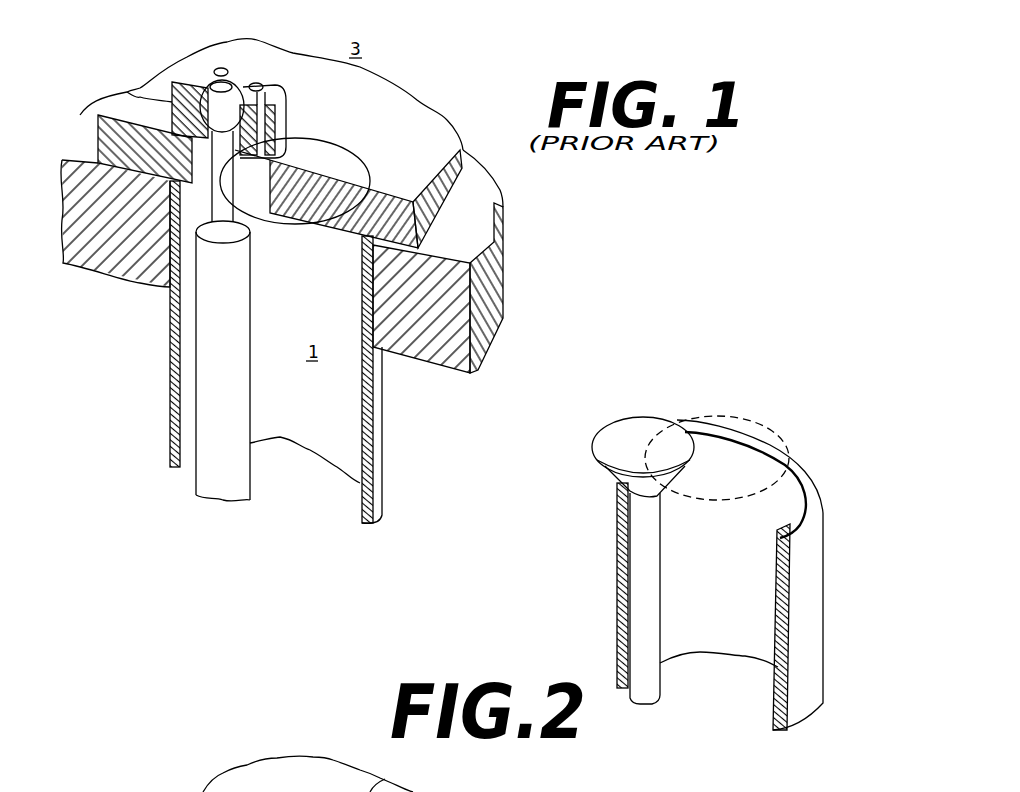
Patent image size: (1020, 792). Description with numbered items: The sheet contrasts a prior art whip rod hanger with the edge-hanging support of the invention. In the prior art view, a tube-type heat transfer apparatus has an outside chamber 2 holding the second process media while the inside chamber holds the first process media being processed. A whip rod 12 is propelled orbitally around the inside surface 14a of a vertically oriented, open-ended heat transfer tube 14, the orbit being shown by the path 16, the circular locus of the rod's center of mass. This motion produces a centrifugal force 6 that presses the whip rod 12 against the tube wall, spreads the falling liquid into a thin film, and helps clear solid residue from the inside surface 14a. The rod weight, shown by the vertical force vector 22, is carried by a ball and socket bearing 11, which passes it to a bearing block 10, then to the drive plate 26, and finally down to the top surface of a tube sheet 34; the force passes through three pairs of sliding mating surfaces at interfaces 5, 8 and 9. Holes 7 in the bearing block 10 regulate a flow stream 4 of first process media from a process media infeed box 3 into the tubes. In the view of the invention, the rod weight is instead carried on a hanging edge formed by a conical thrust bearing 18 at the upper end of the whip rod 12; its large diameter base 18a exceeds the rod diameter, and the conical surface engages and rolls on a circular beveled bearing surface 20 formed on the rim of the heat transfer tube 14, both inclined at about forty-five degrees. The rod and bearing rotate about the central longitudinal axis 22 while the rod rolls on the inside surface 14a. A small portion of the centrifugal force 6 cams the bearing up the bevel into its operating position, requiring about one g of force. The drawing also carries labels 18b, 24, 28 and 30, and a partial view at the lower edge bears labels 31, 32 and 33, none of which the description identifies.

In FIG. 1, the outside chamber 2 is at (96, 321).
In FIG. 1, the process media infeed box 3 is at (271, 143).
In FIG. 1, the flow stream 4 is at (262, 97).
In FIG. 1, the interface 5 is at (93, 153).
In FIG. 1, the centrifugal force 6 is at (140, 397).
In FIG. 2, the centrifugal force 6 is at (598, 612).
In FIG. 1, the holes 7 is at (280, 97).
In FIG. 1, the interface 8 is at (98, 115).
In FIG. 1, the interface 9 is at (214, 70).
In FIG. 1, the bearing block 10 is at (128, 90).
In FIG. 1, the ball and socket bearing 11 is at (205, 80).
In FIG. 1, the whip rod 12 is at (236, 420).
In FIG. 2, the whip rod 12 is at (652, 596).
In FIG. 1, the heat transfer tube 14 is at (374, 444).
In FIG. 2, the heat transfer tube 14 is at (807, 609).
In FIG. 1, the inside surface 14a is at (333, 432).
In FIG. 2, the inside surface 14a is at (748, 655).
In FIG. 1, the path 16 is at (313, 133).
In FIG. 2, the path 16 is at (707, 417).
In FIG. 2, the conical thrust bearing 18 is at (608, 473).
In FIG. 2, the large diameter base 18a is at (622, 432).
In FIG. 2, the head underside 18b is at (632, 490).
In FIG. 2, the beveled bearing surface 20 is at (810, 470).
In FIG. 1, the vertical force vector 22 is at (222, 555).
In FIG. 2, the vertical force vector 22 is at (646, 715).
In FIG. 2, the axis of rotation 24 is at (717, 476).
In FIG. 1, the drive plate 26 is at (430, 128).
In FIG. 1, the upward direction 28 is at (255, 185).
In FIG. 1, the bore 30 is at (260, 218).
In FIG. 2, the component 31 is at (238, 788).
In FIG. 2, the component 32 is at (387, 777).
In FIG. 2, the component 33 is at (325, 791).
In FIG. 1, the tube sheet 34 is at (497, 265).